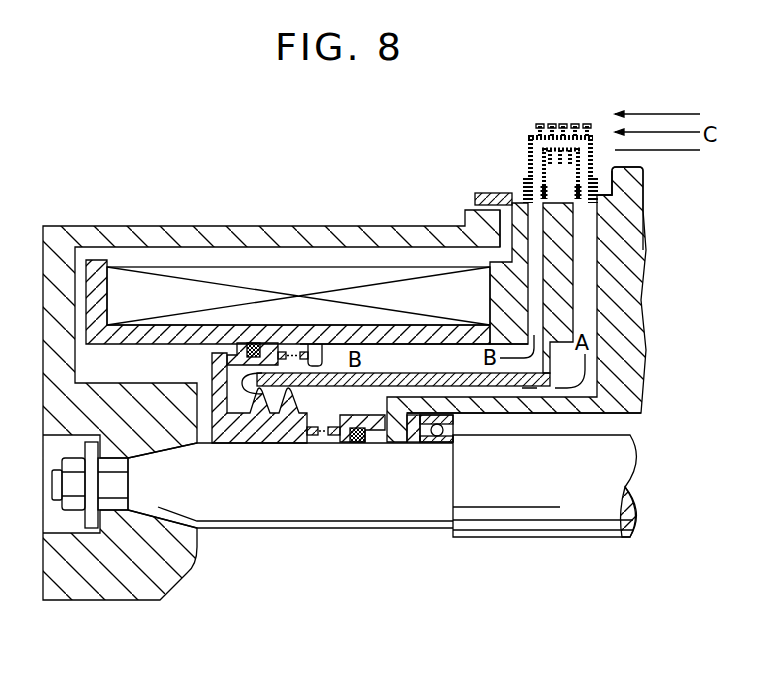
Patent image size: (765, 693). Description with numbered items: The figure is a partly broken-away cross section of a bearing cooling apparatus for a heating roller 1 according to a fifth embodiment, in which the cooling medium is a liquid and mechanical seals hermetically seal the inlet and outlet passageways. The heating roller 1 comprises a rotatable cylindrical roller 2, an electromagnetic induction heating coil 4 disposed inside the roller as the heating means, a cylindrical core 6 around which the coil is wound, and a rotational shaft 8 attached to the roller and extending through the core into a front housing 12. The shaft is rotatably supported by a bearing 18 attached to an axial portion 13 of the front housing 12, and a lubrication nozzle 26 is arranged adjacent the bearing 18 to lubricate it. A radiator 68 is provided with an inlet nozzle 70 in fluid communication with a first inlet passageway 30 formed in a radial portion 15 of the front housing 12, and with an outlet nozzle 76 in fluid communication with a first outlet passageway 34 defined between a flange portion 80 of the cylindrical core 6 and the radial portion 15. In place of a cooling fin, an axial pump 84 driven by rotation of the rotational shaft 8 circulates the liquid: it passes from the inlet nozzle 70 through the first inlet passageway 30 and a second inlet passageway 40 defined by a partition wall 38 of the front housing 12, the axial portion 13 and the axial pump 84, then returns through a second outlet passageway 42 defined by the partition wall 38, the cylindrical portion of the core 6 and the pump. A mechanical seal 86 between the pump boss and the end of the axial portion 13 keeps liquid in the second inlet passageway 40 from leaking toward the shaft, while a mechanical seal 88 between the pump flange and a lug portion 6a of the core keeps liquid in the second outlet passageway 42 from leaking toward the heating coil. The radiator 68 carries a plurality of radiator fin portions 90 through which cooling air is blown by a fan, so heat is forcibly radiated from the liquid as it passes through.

The heating roller 1 is at (271, 390).
The cylindrical roller 2 is at (322, 226).
The electromagnetic induction heating coil 4 is at (350, 280).
The cylindrical core 6 is at (165, 330).
The lug portion 6a is at (316, 343).
The rotational shaft 8 is at (332, 521).
The front housing 12 is at (640, 355).
The axial portion 13 is at (598, 412).
The radial portion 15 is at (638, 236).
The bearing 18 is at (437, 444).
The lubrication nozzle 26 is at (412, 444).
The first inlet passageway 30 is at (586, 270).
The first outlet passageway 34 is at (528, 222).
The partition wall 38 is at (383, 376).
The second inlet passageway 40 is at (505, 413).
The second outlet passageway 42 is at (412, 369).
The radiator 68 is at (566, 118).
The inlet nozzle 70 is at (605, 182).
The outlet nozzle 76 is at (523, 190).
The flange portion 80 is at (490, 194).
The axial pump 84 is at (250, 443).
The mechanical seal 86 is at (358, 444).
The mechanical seal 88 is at (255, 343).
The radiator fin portions 90 is at (540, 128).